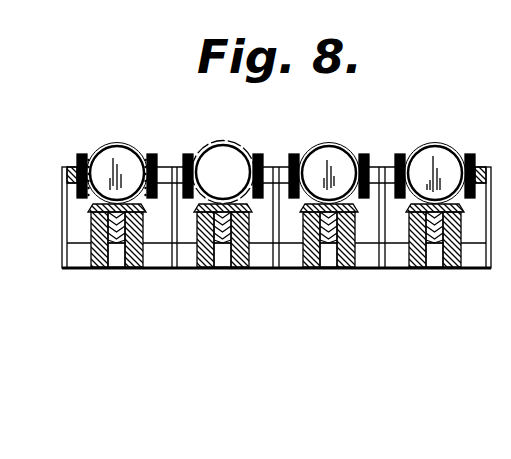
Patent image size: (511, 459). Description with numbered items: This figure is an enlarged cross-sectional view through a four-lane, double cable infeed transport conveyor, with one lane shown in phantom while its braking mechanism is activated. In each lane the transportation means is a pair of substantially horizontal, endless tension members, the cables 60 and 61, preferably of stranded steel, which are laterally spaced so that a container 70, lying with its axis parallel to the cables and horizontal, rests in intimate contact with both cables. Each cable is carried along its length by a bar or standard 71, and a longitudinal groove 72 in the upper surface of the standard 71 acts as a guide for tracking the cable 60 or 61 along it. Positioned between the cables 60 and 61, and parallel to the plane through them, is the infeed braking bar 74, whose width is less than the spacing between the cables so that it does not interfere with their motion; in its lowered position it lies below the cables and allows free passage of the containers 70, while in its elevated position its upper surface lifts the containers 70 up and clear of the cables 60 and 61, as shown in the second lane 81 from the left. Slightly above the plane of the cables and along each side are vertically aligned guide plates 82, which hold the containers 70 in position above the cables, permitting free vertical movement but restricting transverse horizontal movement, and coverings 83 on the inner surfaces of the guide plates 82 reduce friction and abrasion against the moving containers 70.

The endless cable 60 is at (108, 200).
The endless cable 61 is at (137, 197).
The container 70 is at (116, 146).
The standard 71 is at (141, 226).
The longitudinal groove 72 is at (96, 210).
The infeed braking bar 74 is at (116, 268).
The second lane with braking mechanism activated 81 is at (236, 142).
The guide plate 82 is at (69, 168).
The covering 83 is at (102, 152).